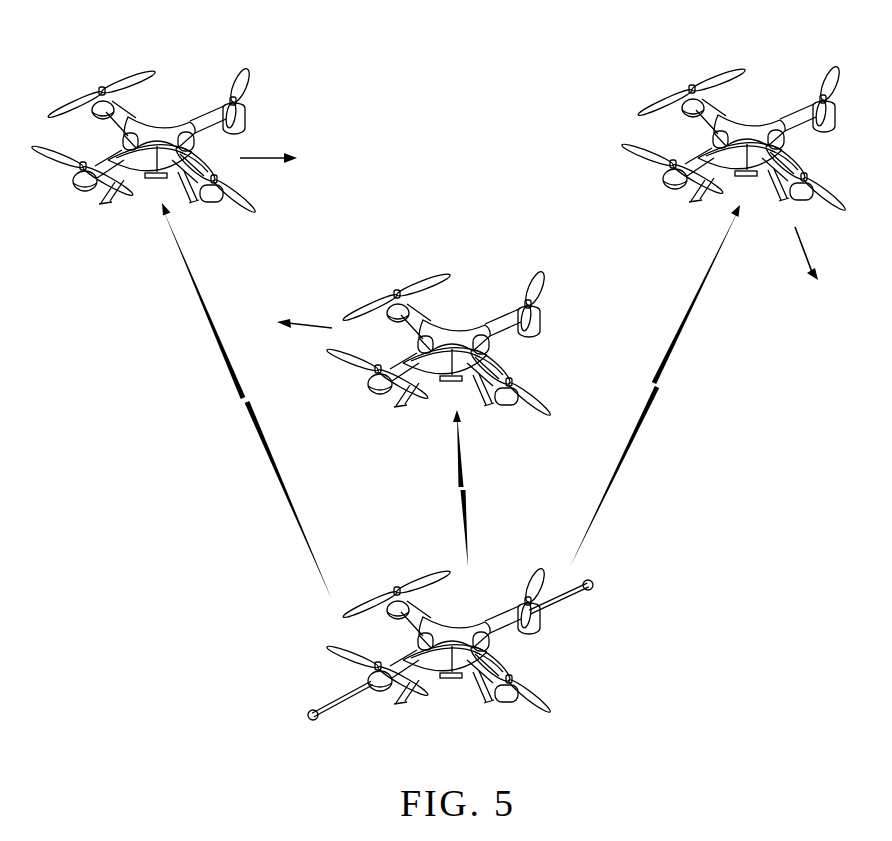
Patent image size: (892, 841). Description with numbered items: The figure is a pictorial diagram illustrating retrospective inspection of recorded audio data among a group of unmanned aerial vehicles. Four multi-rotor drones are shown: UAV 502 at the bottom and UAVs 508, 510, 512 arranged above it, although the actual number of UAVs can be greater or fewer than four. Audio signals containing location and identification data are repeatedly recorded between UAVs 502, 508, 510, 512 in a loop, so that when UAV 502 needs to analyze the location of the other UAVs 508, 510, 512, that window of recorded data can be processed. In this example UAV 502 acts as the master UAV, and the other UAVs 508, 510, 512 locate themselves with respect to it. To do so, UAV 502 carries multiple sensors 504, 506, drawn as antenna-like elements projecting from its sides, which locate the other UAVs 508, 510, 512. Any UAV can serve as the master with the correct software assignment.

The UAV 502 is at (452, 675).
The sensor 504 is at (312, 722).
The sensor 506 is at (592, 590).
The UAV 508 is at (165, 128).
The UAV 510 is at (460, 331).
The UAV 512 is at (755, 126).